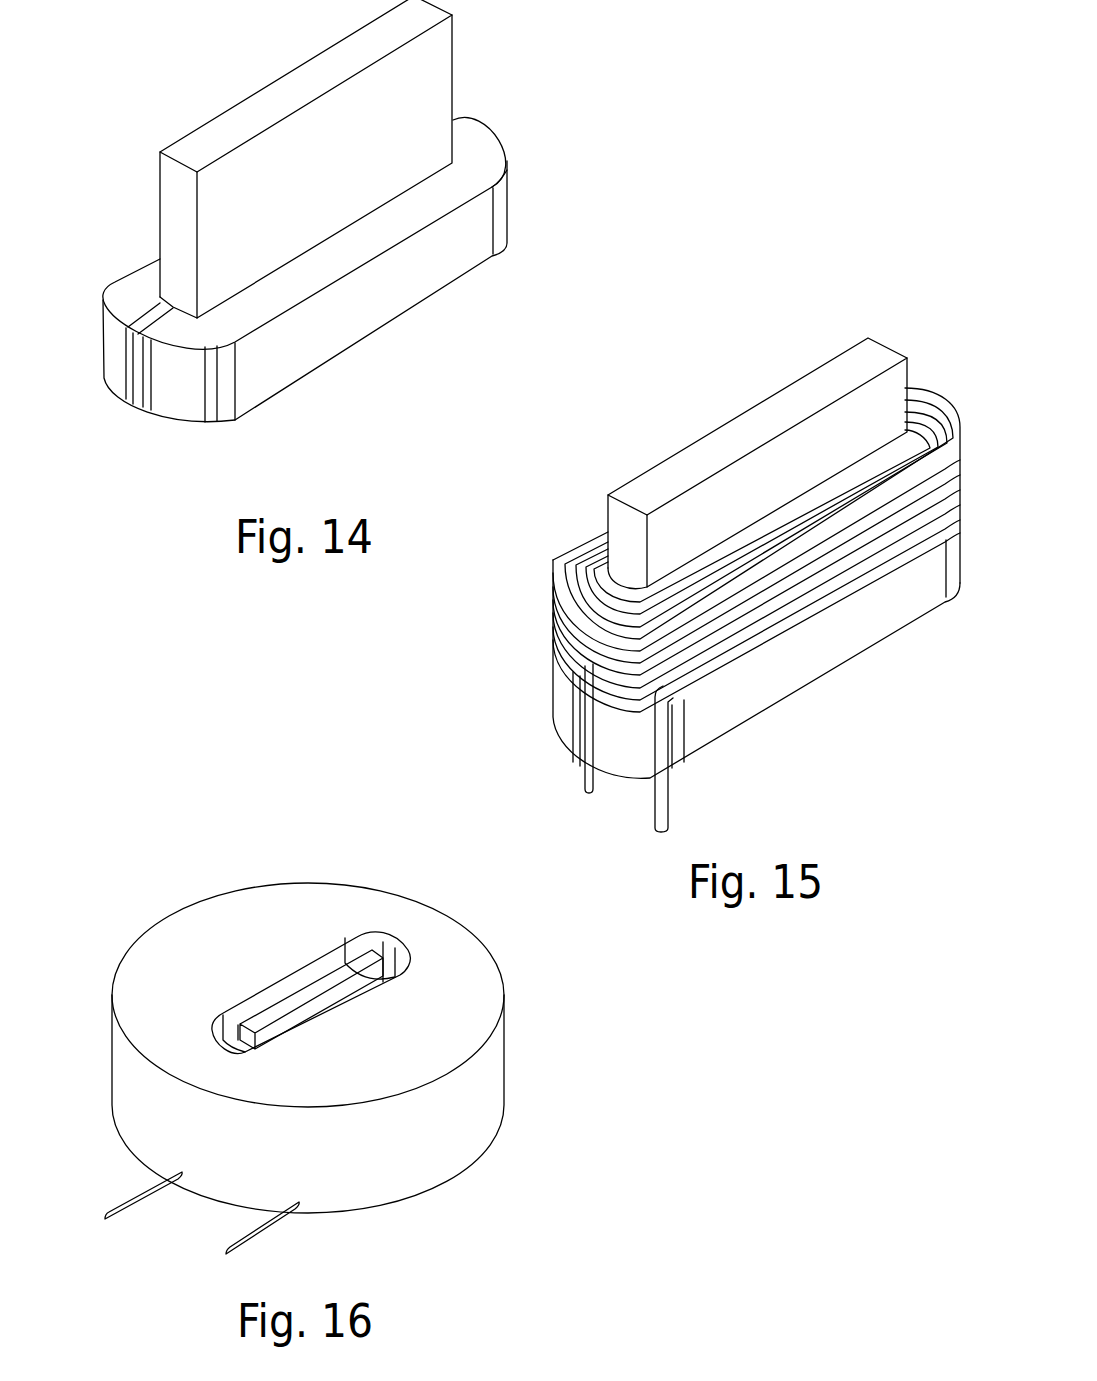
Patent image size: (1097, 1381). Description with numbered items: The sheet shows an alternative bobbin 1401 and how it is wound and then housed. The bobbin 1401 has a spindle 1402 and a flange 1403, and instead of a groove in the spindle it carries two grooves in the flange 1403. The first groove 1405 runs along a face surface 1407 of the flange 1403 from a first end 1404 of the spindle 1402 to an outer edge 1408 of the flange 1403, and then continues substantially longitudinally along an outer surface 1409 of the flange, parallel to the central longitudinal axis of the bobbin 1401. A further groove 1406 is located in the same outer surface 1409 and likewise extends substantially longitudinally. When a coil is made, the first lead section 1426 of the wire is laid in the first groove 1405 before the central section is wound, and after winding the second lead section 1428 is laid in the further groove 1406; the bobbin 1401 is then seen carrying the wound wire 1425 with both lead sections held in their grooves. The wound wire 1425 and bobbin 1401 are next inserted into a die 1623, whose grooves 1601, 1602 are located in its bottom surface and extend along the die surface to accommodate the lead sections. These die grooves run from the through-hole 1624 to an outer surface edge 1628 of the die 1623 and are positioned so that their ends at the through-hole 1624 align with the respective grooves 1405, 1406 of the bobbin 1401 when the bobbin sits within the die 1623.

In FIG. 14, the bobbin 1401 is at (503, 95).
In FIG. 15, the bobbin 1401 is at (818, 341).
In FIG. 16, the bobbin 1401 is at (360, 958).
In FIG. 14, the spindle 1402 is at (437, 57).
In FIG. 14, the flange 1403 is at (465, 277).
In FIG. 15, the flange 1403 is at (810, 657).
In FIG. 14, the first end of the spindle 1404 is at (175, 296).
In FIG. 14, the first groove 1405 is at (150, 317).
In FIG. 15, the first groove 1405 is at (580, 718).
In FIG. 14, the further groove 1406 is at (210, 403).
In FIG. 15, the further groove 1406 is at (670, 727).
In FIG. 14, the face surface of the flange 1407 is at (362, 243).
In FIG. 14, the outer edge of the flange 1408 is at (178, 357).
In FIG. 14, the outer surface of the flange 1409 is at (347, 330).
In FIG. 15, the wound wire 1425 is at (567, 613).
In FIG. 15, the first lead section 1426 is at (580, 768).
In FIG. 16, the first lead section 1426 is at (128, 1198).
In FIG. 15, the second lead section 1428 is at (662, 792).
In FIG. 16, the second lead section 1428 is at (257, 1233).
In FIG. 16, the die 1623 is at (507, 1058).
In FIG. 16, the through-hole 1624 is at (322, 950).
In FIG. 16, the housing side wall 1628 is at (480, 1160).
In FIG. 16, the groove 1601 is at (300, 1203).
In FIG. 16, the groove 1602 is at (183, 1180).